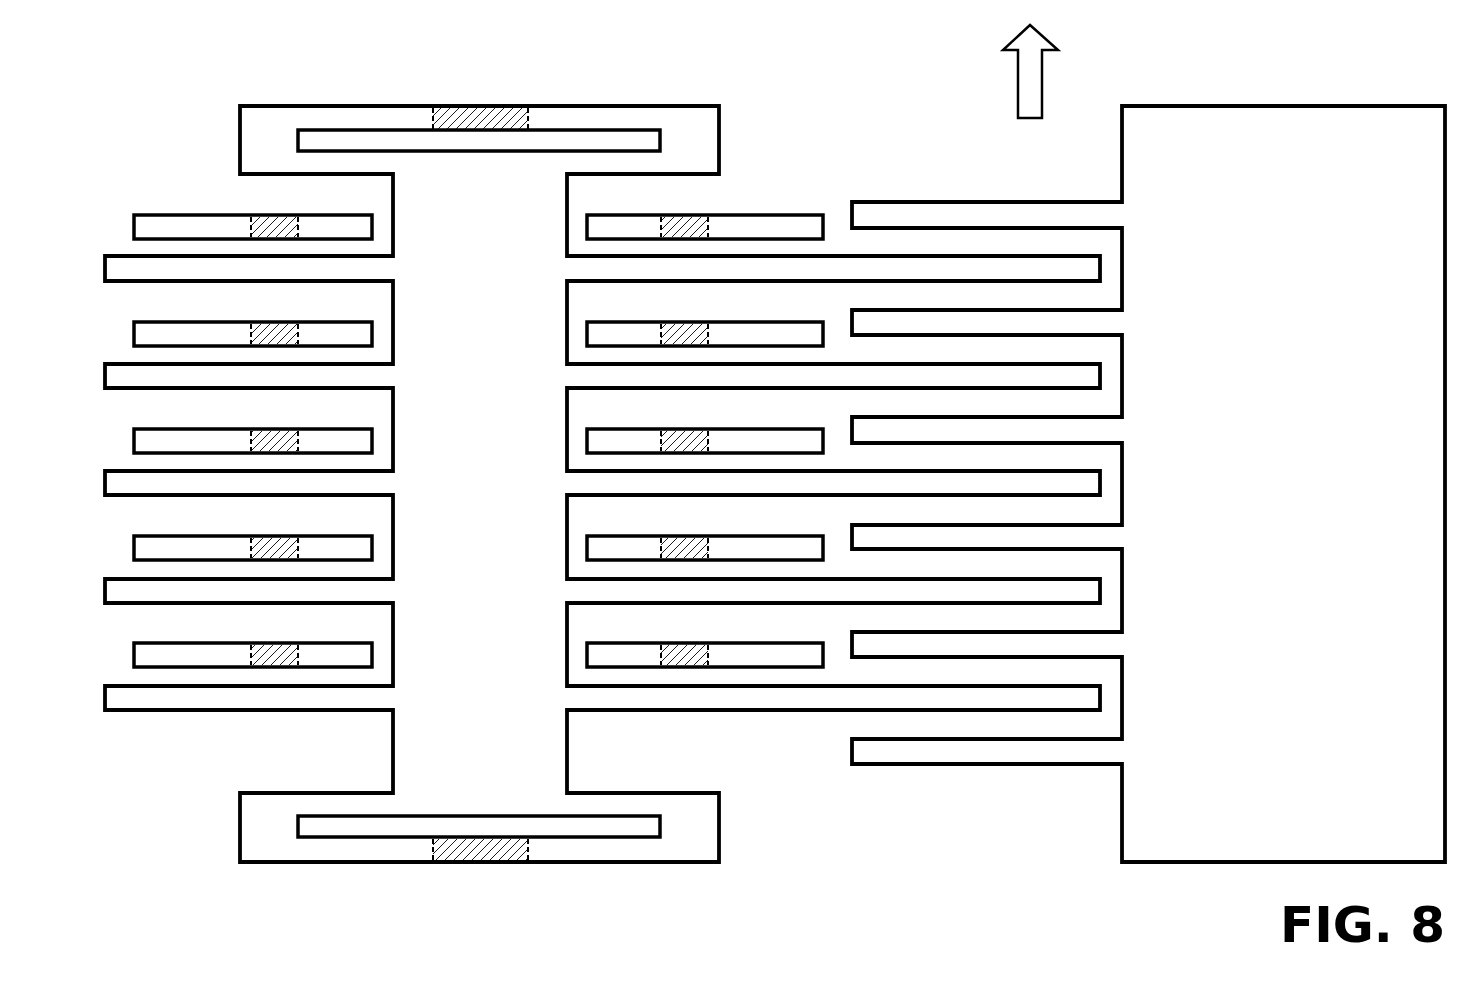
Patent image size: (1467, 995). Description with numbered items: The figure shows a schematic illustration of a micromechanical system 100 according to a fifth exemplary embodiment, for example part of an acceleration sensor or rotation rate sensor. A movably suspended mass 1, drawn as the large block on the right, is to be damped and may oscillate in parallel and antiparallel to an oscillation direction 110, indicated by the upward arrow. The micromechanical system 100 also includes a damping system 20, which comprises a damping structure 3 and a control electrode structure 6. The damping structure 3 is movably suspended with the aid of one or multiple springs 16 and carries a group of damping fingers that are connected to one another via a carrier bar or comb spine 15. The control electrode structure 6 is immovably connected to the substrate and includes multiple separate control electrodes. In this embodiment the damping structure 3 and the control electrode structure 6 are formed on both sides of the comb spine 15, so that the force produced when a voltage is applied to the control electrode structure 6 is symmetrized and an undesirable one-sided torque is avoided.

The micromechanical system 100 is at (182, 128).
The damping system 20 is at (152, 772).
The damping structure 3 is at (470, 497).
The spring 16 is at (358, 122).
The comb spine 15 is at (488, 415).
The control electrode structure 6 is at (201, 652).
The movably suspended mass 1 is at (1272, 497).
The oscillation direction 110 is at (1031, 106).